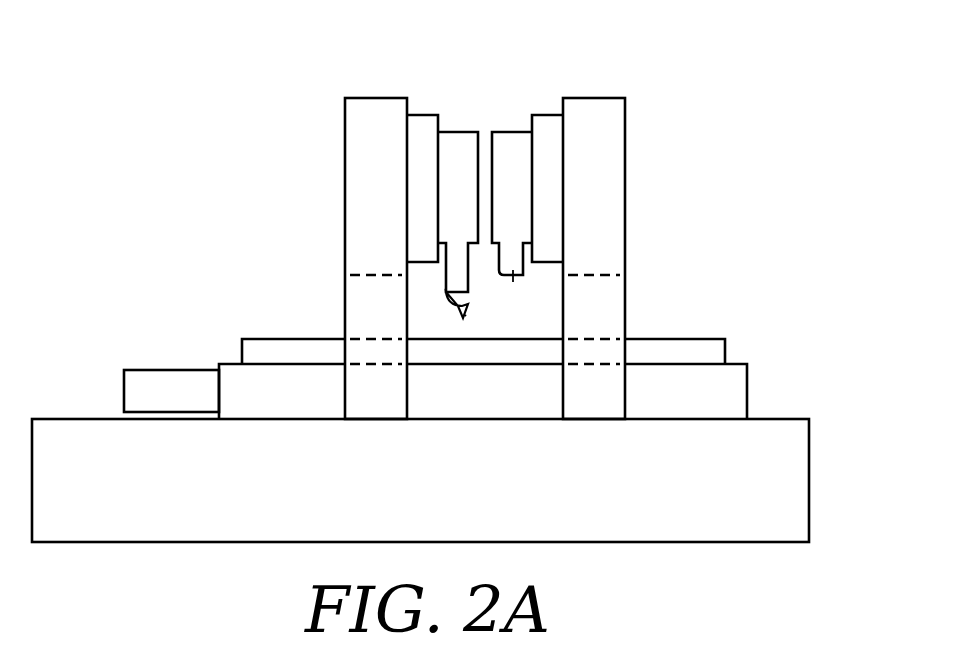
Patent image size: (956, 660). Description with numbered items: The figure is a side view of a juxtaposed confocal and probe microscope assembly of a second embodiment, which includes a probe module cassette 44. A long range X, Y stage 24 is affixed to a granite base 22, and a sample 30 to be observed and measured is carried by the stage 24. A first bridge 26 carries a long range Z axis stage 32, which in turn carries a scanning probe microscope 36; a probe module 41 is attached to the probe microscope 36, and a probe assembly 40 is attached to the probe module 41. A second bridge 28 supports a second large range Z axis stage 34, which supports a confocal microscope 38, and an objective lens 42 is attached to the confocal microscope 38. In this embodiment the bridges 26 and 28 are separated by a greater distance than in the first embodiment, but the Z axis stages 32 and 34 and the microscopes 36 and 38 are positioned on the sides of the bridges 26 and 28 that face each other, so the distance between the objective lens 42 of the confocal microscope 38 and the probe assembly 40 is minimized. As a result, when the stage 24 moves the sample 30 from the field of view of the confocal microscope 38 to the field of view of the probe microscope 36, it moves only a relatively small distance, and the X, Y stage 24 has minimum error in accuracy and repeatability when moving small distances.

The granite base 22 is at (793, 478).
The long range X, Y stage 24 is at (733, 389).
The first bridge 26 is at (372, 115).
The second bridge 28 is at (600, 115).
The sample 30 is at (720, 350).
The long range Z axis stage 32 is at (425, 178).
The second large range Z axis stage 34 is at (545, 178).
The scanning probe microscope 36 is at (458, 143).
The confocal microscope 38 is at (515, 143).
The probe assembly 40 is at (465, 315).
The probe module 41 is at (447, 297).
The objective lens 42 is at (513, 270).
The probe module cassette 44 is at (148, 385).